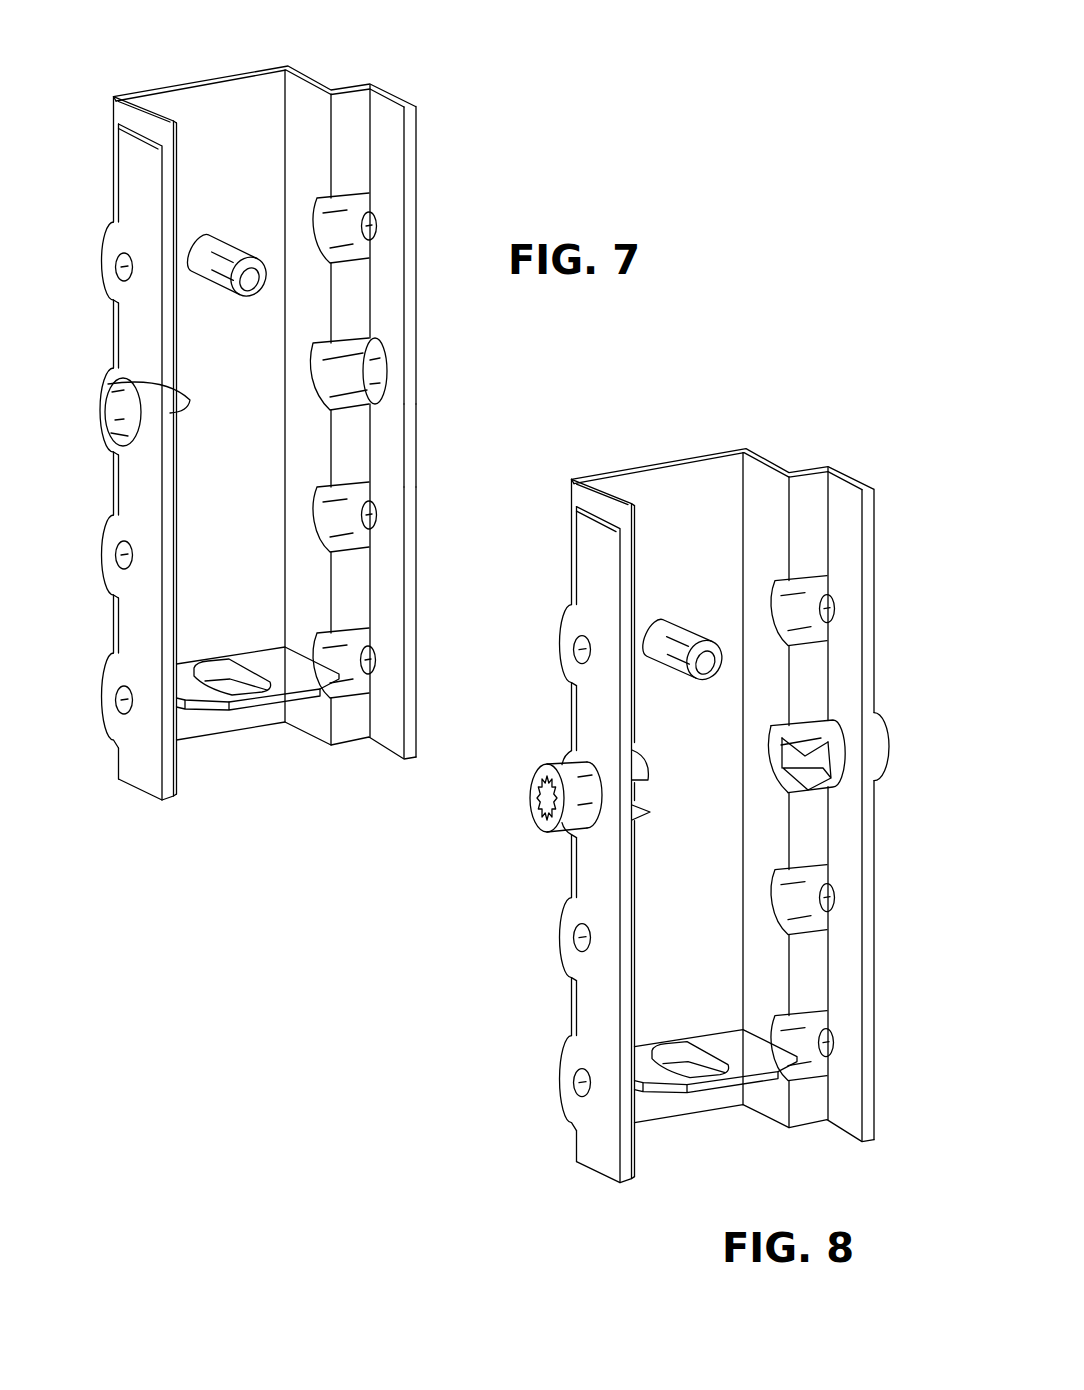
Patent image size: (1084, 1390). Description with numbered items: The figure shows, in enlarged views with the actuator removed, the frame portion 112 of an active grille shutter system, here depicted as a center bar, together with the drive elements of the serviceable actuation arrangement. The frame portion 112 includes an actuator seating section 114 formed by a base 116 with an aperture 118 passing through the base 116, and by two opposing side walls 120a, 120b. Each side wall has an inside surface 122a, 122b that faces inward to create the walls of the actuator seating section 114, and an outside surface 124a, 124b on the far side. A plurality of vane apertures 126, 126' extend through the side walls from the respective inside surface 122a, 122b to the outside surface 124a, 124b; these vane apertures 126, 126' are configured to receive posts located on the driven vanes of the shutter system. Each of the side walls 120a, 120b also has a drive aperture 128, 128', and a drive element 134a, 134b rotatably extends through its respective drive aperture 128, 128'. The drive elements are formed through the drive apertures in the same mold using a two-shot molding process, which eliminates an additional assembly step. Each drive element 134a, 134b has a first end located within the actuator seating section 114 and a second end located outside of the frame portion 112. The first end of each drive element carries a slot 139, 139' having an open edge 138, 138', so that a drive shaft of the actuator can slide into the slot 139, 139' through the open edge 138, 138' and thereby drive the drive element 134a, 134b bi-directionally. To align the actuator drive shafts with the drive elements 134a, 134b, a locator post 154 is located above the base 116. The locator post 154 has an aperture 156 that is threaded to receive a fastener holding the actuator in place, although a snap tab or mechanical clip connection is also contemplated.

In FIG. 7, the frame portion 112 is at (320, 82).
In FIG. 8, the frame portion 112 is at (762, 450).
In FIG. 8, the actuator seating section 114 is at (713, 771).
In FIG. 8, the base 116 is at (755, 1063).
In FIG. 8, the aperture 118 is at (683, 1065).
In FIG. 7, the side wall 120a is at (116, 448).
In FIG. 7, the side wall 120b is at (422, 403).
In FIG. 7, the inside surface 122a is at (108, 387).
In FIG. 7, the inside surface 122b is at (393, 313).
In FIG. 7, the outside surface 124a is at (133, 487).
In FIG. 7, the outside surface 124b is at (419, 442).
In FIG. 7, the vane apertures 126 is at (95, 490).
In FIG. 7, the vane apertures 126' is at (437, 414).
In FIG. 7, the drive aperture 128 is at (98, 423).
In FIG. 7, the drive aperture 128' is at (396, 374).
In FIG. 8, the drive element 134a is at (535, 805).
In FIG. 8, the drive element 134b is at (825, 738).
In FIG. 8, the open edge 138 is at (609, 769).
In FIG. 8, the open edge 138' is at (866, 716).
In FIG. 8, the slot 139 is at (663, 803).
In FIG. 8, the slot 139' is at (754, 763).
In FIG. 8, the locator post 154 is at (683, 640).
In FIG. 8, the aperture 156 is at (712, 672).